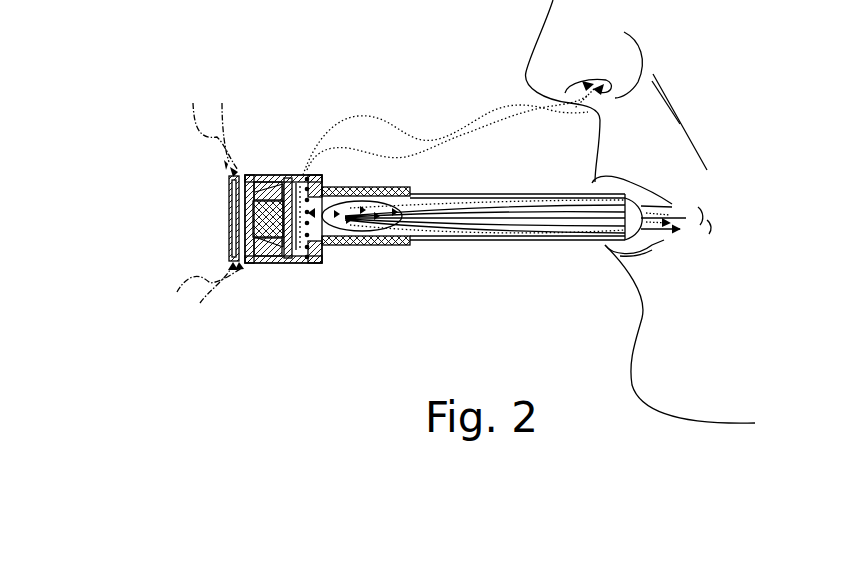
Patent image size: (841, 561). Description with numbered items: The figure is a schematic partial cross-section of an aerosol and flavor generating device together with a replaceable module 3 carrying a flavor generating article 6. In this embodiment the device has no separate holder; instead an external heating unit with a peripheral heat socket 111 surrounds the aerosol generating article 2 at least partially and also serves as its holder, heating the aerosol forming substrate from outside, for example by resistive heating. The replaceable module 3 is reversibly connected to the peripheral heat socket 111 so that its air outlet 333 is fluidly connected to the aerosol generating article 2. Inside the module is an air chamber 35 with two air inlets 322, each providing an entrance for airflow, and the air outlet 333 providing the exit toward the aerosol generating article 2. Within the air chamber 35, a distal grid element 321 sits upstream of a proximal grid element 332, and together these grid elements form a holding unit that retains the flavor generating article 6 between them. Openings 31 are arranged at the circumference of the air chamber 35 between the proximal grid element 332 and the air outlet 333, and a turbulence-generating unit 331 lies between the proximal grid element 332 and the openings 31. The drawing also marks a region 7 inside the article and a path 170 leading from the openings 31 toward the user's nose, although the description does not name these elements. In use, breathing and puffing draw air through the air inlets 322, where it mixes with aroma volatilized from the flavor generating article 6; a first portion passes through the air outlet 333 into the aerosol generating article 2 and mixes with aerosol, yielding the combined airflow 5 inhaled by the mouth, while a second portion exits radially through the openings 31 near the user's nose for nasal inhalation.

The aerosol generating article 2 is at (500, 203).
The replaceable module 3 is at (283, 172).
The combined airflow 5 is at (502, 224).
The flavor generating article 6 is at (253, 202).
The measurement zone 7 is at (402, 199).
The openings 31 is at (306, 172).
The air chamber 35 is at (306, 258).
The peripheral heat socket 111 is at (403, 245).
The exhaled air path 170 is at (351, 172).
The distal grid element 321 is at (252, 193).
The air inlets 322 is at (239, 170).
The turbulence-generating unit 331 is at (292, 256).
The proximal grid element 332 is at (288, 256).
The air outlet 333 is at (318, 256).